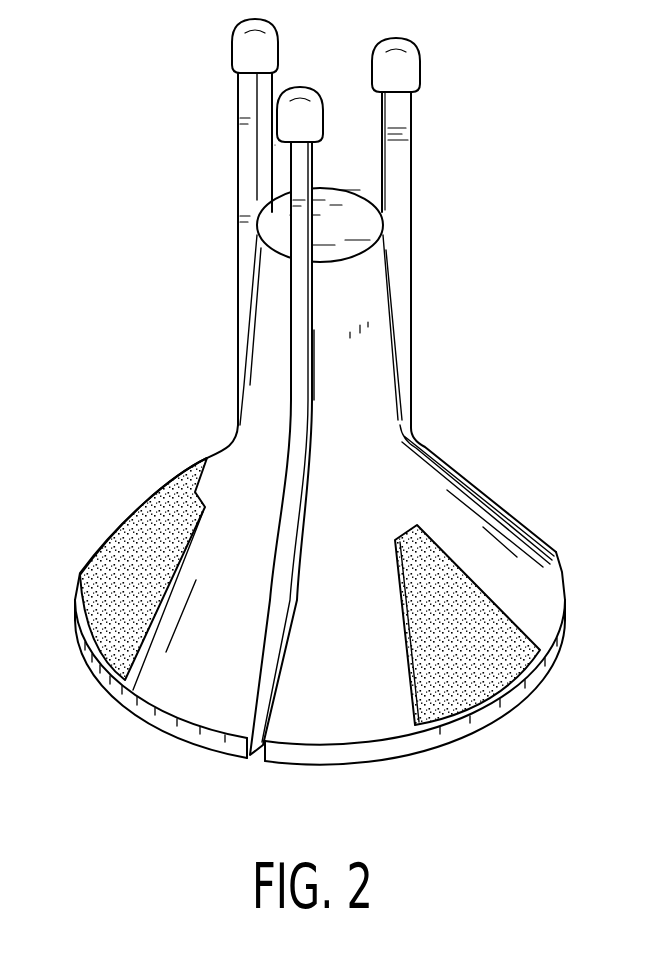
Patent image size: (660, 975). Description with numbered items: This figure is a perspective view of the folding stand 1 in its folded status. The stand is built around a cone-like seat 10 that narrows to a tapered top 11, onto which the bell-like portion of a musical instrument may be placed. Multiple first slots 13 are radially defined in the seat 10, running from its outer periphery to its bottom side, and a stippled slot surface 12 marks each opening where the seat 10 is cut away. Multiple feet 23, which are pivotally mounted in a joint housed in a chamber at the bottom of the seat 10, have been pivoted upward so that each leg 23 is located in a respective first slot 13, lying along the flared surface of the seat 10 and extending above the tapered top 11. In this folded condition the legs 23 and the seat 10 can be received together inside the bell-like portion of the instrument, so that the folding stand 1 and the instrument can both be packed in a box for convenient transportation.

The folding stand 1 is at (353, 392).
The cone-like seat 10 is at (540, 593).
The tapered top 11 is at (357, 303).
The slot 12 is at (473, 682).
The first slots 13 is at (312, 325).
The feet 23 is at (302, 173).